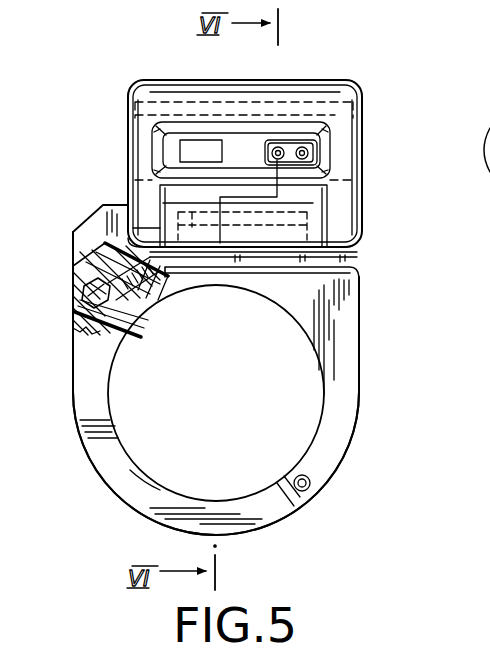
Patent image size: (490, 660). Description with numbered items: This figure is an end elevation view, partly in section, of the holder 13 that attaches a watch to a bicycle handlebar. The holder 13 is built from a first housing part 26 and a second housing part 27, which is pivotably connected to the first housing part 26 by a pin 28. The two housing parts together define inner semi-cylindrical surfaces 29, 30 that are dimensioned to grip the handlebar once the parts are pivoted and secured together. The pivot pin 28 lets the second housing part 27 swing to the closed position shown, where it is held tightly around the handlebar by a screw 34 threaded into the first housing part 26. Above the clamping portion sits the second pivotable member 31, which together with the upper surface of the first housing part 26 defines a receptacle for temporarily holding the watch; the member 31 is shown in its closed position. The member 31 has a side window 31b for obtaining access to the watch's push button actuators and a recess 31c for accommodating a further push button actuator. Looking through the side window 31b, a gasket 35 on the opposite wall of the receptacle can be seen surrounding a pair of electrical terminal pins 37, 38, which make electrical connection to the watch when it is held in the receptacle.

The holder 13 is at (394, 406).
The first housing part 26 is at (365, 310).
The second housing part 27 is at (137, 520).
The pin 28 is at (309, 484).
The inner semi-cylindrical surface 29 is at (293, 340).
The inner semi-cylindrical surface 30 is at (151, 474).
The second pivotable member 31 is at (366, 115).
The side window 31b is at (247, 137).
The recess 31c is at (190, 144).
The screw 34 is at (91, 297).
The gasket 35 is at (297, 142).
The electrical terminal pin 37 is at (283, 160).
The electrical terminal pin 38 is at (309, 153).